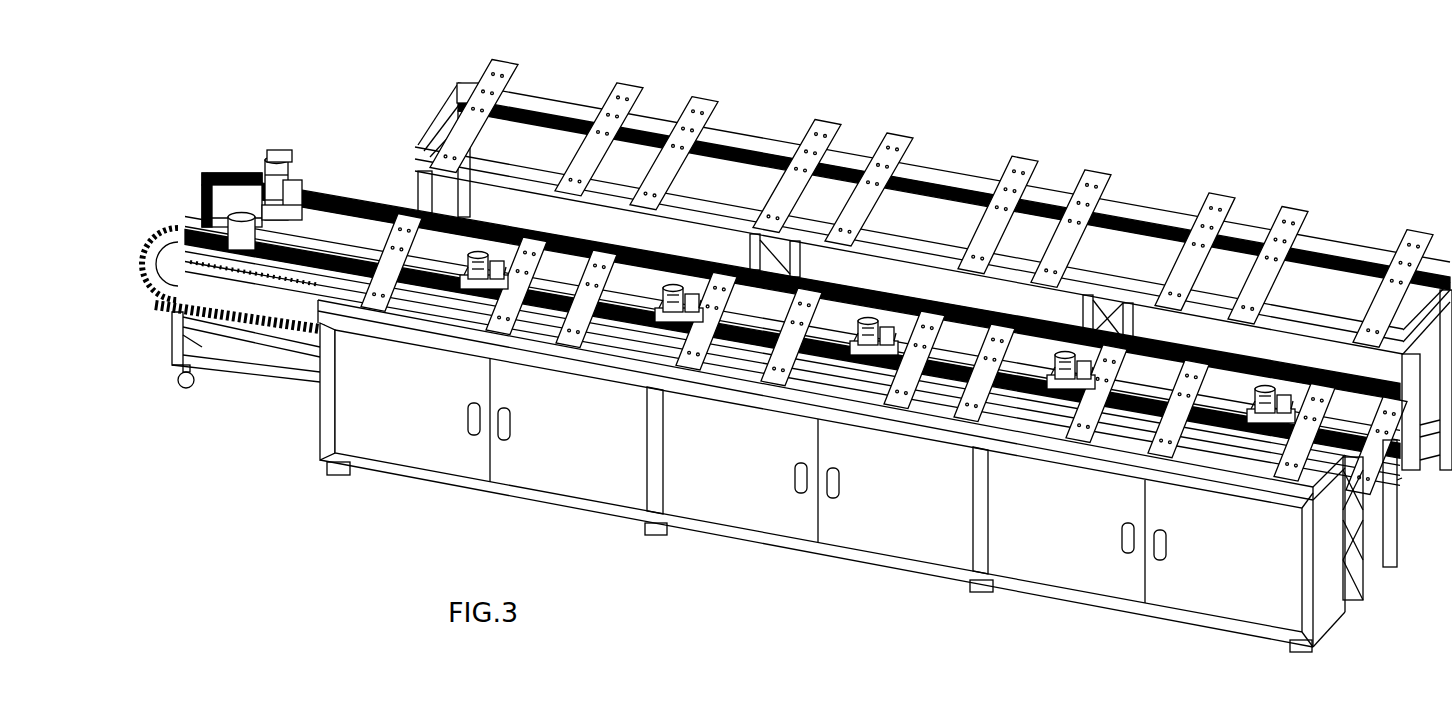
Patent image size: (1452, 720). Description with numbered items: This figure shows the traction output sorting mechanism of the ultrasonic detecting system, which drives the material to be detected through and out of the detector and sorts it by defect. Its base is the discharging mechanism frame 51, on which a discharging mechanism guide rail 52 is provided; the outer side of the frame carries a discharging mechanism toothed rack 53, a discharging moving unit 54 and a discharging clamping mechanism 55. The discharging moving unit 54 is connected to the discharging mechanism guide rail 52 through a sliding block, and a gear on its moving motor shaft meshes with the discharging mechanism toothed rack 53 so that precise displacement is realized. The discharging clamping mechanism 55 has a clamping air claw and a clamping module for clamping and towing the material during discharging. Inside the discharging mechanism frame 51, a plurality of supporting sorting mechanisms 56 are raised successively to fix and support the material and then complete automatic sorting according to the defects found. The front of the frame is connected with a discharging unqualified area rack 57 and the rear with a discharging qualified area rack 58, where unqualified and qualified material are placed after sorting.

The discharging mechanism frame 51 is at (172, 340).
The discharging mechanism guide rail 52 is at (188, 200).
The discharging mechanism toothed rack 53 is at (280, 318).
The discharging moving unit 54 is at (290, 188).
The discharging clamping mechanism 55 is at (272, 158).
The supporting sorting mechanism 56 is at (478, 238).
The discharging unqualified area rack 57 is at (402, 305).
The discharging qualified area rack 58 is at (748, 145).